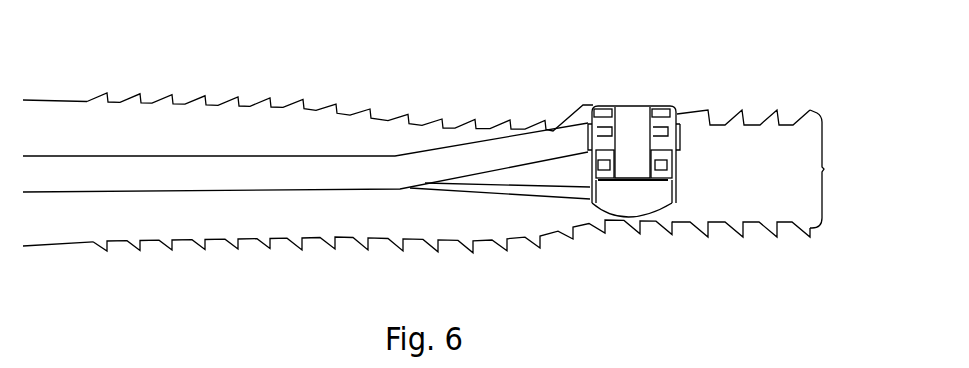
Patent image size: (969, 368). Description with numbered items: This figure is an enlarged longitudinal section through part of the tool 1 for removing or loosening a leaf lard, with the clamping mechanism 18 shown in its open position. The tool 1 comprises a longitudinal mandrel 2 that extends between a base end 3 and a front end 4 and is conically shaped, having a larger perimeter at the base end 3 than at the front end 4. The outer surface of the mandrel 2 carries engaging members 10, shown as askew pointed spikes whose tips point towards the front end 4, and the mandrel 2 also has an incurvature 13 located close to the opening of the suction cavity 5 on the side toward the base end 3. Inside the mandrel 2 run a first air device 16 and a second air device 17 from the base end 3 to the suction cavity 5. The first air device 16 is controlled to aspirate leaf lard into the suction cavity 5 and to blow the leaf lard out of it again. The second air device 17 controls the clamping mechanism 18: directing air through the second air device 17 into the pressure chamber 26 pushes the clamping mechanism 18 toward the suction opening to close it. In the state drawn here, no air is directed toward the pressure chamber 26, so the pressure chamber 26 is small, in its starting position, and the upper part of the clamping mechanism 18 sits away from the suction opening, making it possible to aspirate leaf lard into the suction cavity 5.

The tool 1 is at (112, 54).
The mandrel 2 is at (106, 142).
The base end 3 is at (49, 258).
The front end 4 is at (795, 182).
The suction cavity 5 is at (631, 89).
The engaging members 10 is at (233, 248).
The incurvature 13 is at (503, 97).
The first air device 16 is at (231, 184).
The second air device 17 is at (541, 193).
The clamping mechanism 18 is at (648, 154).
The pressure chamber 26 is at (627, 196).